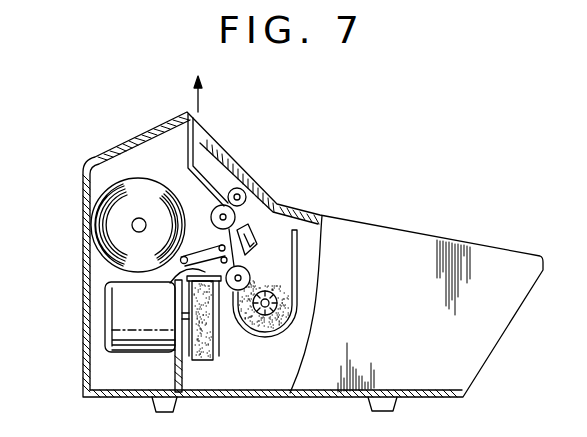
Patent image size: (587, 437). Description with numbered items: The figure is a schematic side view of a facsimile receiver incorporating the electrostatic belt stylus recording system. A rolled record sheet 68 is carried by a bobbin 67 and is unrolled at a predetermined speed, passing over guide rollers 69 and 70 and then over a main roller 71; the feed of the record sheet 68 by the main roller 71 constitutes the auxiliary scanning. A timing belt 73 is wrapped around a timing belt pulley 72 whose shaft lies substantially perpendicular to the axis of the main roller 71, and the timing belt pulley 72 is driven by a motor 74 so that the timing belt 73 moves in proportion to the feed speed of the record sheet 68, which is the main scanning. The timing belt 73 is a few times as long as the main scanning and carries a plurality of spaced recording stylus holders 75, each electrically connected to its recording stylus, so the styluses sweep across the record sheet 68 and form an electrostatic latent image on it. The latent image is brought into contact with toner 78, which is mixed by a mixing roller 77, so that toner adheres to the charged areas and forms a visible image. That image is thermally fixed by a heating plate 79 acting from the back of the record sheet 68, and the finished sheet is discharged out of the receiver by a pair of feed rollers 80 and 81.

The bobbin 67 is at (140, 218).
The rolled record sheet 68 is at (113, 190).
The guide roller 69 is at (172, 262).
The guide roller 70 is at (243, 238).
The main roller 71 is at (220, 321).
The timing belt pulley 72 is at (182, 357).
The timing belt 73 is at (203, 362).
The motor 74 is at (110, 321).
The recording stylus holder 75 is at (182, 282).
The mixing roller 77 is at (275, 297).
The toner 78 is at (291, 314).
The heating plate 79 is at (250, 262).
The feed roller 80 is at (234, 212).
The feed roller 81 is at (234, 190).